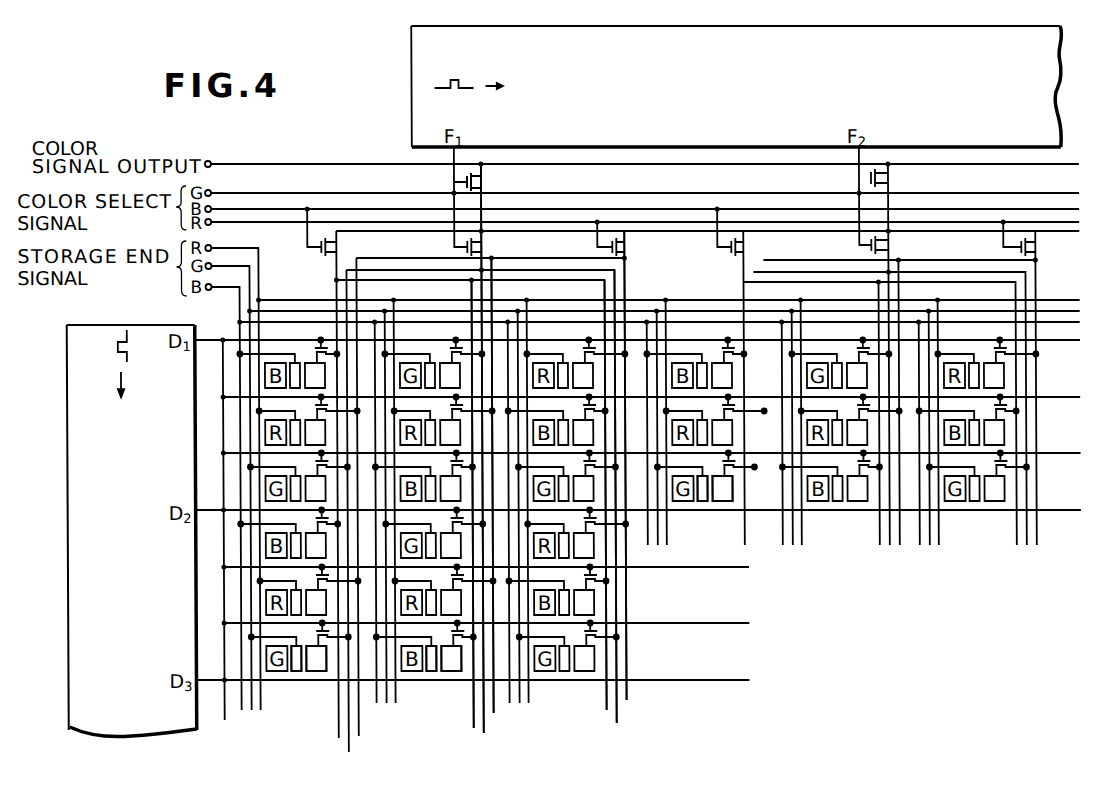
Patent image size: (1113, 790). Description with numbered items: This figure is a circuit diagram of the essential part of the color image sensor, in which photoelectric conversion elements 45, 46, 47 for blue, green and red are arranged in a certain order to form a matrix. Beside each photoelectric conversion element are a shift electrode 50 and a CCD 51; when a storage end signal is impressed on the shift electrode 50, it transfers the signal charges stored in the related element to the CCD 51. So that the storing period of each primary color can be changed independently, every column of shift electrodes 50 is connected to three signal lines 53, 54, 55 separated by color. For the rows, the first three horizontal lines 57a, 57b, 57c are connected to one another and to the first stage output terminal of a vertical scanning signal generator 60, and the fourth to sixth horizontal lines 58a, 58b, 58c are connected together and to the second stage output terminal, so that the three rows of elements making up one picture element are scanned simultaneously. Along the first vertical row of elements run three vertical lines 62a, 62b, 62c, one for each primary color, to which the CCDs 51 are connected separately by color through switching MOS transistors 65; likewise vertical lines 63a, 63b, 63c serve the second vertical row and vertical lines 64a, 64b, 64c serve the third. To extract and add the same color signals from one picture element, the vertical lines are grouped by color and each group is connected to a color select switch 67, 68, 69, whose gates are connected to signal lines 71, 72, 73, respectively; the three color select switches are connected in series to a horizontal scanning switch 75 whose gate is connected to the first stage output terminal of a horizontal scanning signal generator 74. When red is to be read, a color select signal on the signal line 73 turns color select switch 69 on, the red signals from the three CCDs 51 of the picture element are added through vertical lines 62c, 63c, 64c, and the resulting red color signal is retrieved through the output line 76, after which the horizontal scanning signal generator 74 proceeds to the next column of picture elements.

The photoelectric conversion element 45 is at (413, 671).
The photoelectric conversion element 46 is at (278, 671).
The photoelectric conversion element 47 is at (265, 600).
The shift electrode 50 is at (295, 671).
The CCD 51 is at (316, 671).
The signal line 53 is at (259, 247).
The signal line 54 is at (236, 266).
The signal line 55 is at (223, 288).
The horizontal line 57a is at (1068, 340).
The horizontal line 57b is at (1068, 397).
The horizontal line 57c is at (1068, 453).
The horizontal line 58a is at (1068, 510).
The horizontal line 58b is at (744, 567).
The horizontal line 58c is at (744, 623).
The vertical scanning signal generator 60 is at (150, 325).
The vertical line 62a is at (337, 736).
The vertical line 62b is at (348, 752).
The vertical line 62c is at (358, 736).
The vertical line 63a is at (472, 729).
The vertical line 63b is at (483, 733).
The vertical line 63c is at (493, 713).
The vertical line 64a is at (605, 710).
The vertical line 64b is at (615, 723).
The vertical line 64c is at (625, 700).
The switching MOS transistor 65 is at (318, 348).
The color select switch 67 is at (325, 251).
The color select switch 68 is at (477, 247).
The color select switch 69 is at (629, 247).
The signal line 71 is at (277, 193).
The signal line 72 is at (350, 209).
The signal line 73 is at (392, 222).
The horizontal scanning signal generator 74 is at (413, 96).
The horizontal scanning switch 75 is at (477, 180).
The output line 76 is at (269, 164).